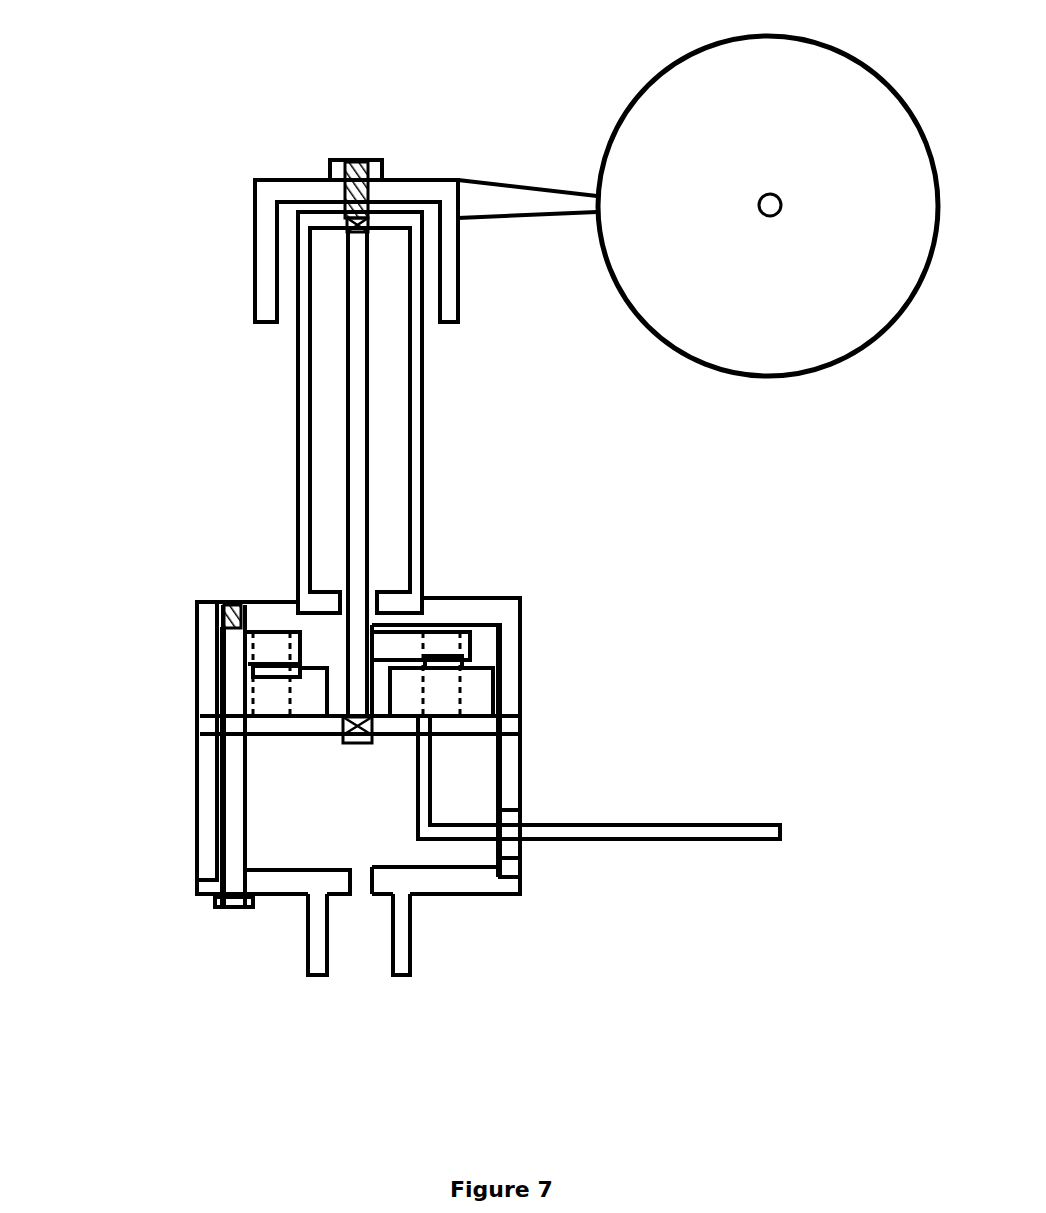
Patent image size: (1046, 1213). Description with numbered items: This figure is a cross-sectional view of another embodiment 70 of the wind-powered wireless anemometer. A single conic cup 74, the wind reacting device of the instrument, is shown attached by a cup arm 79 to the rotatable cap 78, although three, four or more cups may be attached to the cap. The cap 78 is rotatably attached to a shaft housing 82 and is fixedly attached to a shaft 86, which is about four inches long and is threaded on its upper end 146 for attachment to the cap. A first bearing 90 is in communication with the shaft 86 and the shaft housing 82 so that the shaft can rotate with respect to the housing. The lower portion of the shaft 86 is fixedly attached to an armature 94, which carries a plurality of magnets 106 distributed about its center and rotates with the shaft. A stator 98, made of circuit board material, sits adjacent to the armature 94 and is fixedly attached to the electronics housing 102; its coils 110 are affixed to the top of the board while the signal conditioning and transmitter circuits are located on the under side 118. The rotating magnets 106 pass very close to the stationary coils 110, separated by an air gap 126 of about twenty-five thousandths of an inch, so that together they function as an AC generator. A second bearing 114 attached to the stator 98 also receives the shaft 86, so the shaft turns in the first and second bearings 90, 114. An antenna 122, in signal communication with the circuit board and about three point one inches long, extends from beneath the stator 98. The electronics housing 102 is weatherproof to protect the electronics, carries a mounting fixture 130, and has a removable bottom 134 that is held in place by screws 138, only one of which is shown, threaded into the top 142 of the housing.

The wind-powered wireless anemometer 70 is at (163, 1051).
The conic cup 74 is at (786, 348).
The rotatable cap 78 is at (557, 205).
The cup arm 79 is at (443, 180).
The shaft housing 82 is at (305, 395).
The shaft 86 is at (357, 330).
The first bearing 90 is at (372, 218).
The armature 94 is at (400, 648).
The stator 98 is at (458, 736).
The electronics housing 102 is at (505, 675).
The magnets 106 is at (276, 645).
The coils 110 is at (215, 722).
The second bearing 114 is at (355, 740).
The under side of the stator 118 is at (300, 732).
The antenna 122 is at (735, 840).
The air gap 126 is at (270, 690).
The mounting fixture 130 is at (418, 935).
The removable bottom 134 is at (482, 893).
The screw 138 is at (235, 906).
The top of the electronics housing 142 is at (228, 612).
The upper end of the shaft 146 is at (352, 163).